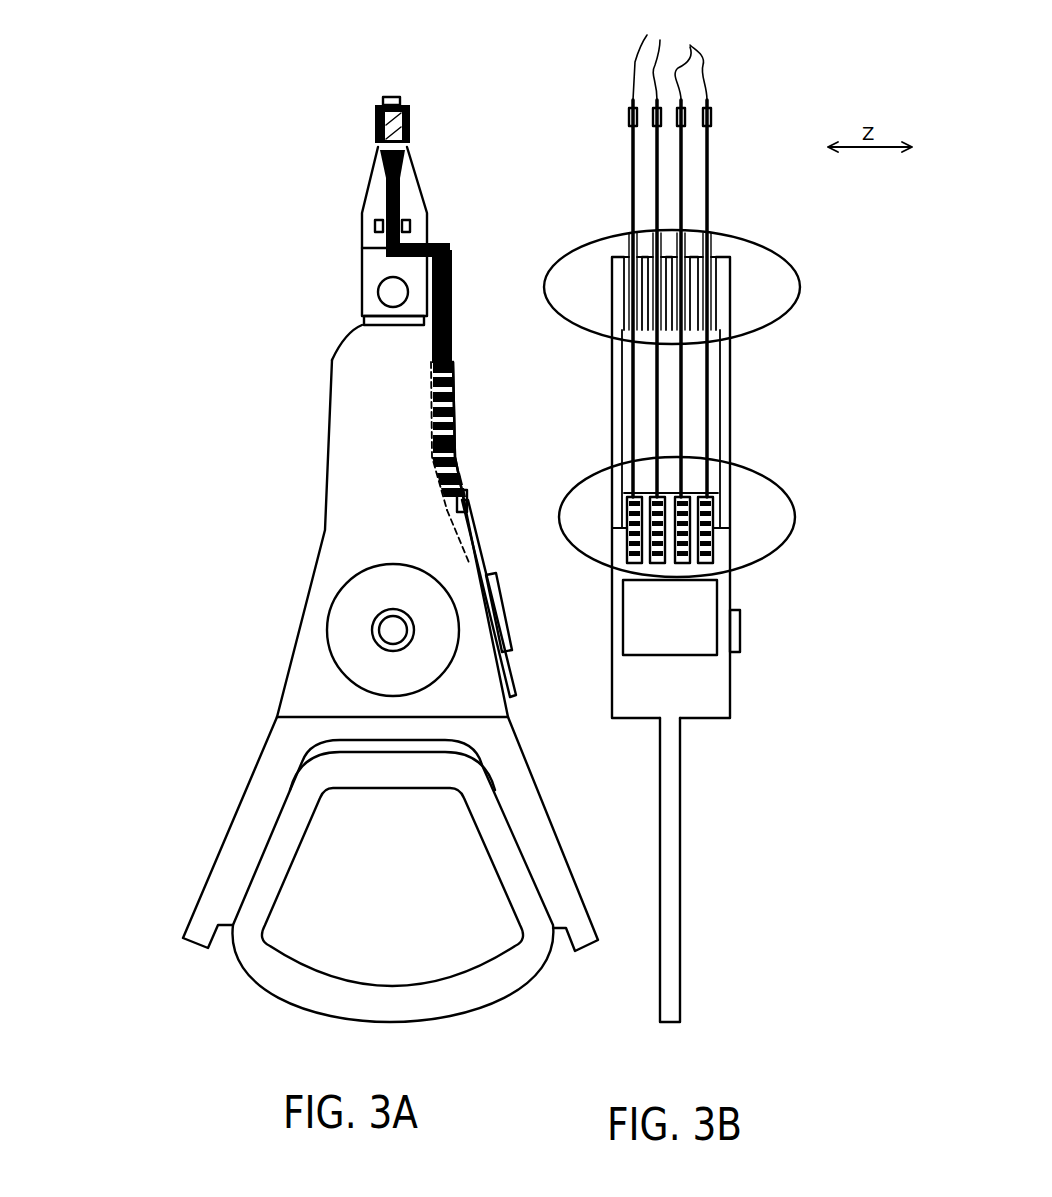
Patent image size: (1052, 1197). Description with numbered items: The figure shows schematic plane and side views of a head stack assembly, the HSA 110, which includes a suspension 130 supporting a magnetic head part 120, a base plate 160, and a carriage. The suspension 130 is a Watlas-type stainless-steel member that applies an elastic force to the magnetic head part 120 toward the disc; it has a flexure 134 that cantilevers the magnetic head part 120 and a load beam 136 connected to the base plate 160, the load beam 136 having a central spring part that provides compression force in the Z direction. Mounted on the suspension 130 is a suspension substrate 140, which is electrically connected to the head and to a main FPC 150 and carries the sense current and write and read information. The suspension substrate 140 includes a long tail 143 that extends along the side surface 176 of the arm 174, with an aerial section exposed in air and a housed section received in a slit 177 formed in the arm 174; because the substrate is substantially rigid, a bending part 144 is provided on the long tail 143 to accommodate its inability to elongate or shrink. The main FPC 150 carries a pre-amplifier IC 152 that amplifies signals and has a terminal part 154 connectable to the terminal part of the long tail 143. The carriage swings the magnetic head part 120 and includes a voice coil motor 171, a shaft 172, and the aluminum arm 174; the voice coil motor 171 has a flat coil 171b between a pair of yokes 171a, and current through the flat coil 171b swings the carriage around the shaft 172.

In FIG. 3A, the HSA 110 is at (309, 365).
In FIG. 3A, the magnetic head part 120 is at (398, 97).
In FIG. 3B, the magnetic head part 120 is at (670, 52).
In FIG. 3A, the suspension 130 is at (349, 211).
In FIG. 3B, the suspension 130 is at (658, 180).
In FIG. 3A, the flexure 134 is at (407, 133).
In FIG. 3A, the load beam 136 is at (372, 190).
In FIG. 3A, the suspension substrate 140 is at (429, 212).
In FIG. 3A, the long tail 143 is at (471, 273).
In FIG. 3B, the bending part 144 is at (791, 246).
In FIG. 3A, the main FPC 150 is at (505, 680).
In FIG. 3B, the main FPC 150 is at (722, 597).
In FIG. 3A, the pre-amplifier IC 152 is at (500, 623).
In FIG. 3A, the terminal part 154 is at (468, 500).
In FIG. 3B, the terminal part 154 is at (786, 472).
In FIG. 3A, the base plate 160 is at (372, 266).
In FIG. 3A, the voice coil motor 171 is at (167, 786).
In FIG. 3B, the voice coil motor 171 is at (737, 859).
In FIG. 3A, the yokes 171a is at (215, 892).
In FIG. 3A, the flat coil 171b is at (272, 980).
In FIG. 3A, the shaft 172 is at (373, 637).
In FIG. 3A, the arm 174 is at (339, 404).
In FIG. 3A, the side surface 176 is at (477, 409).
In FIG. 3A, the slit 177 is at (456, 528).